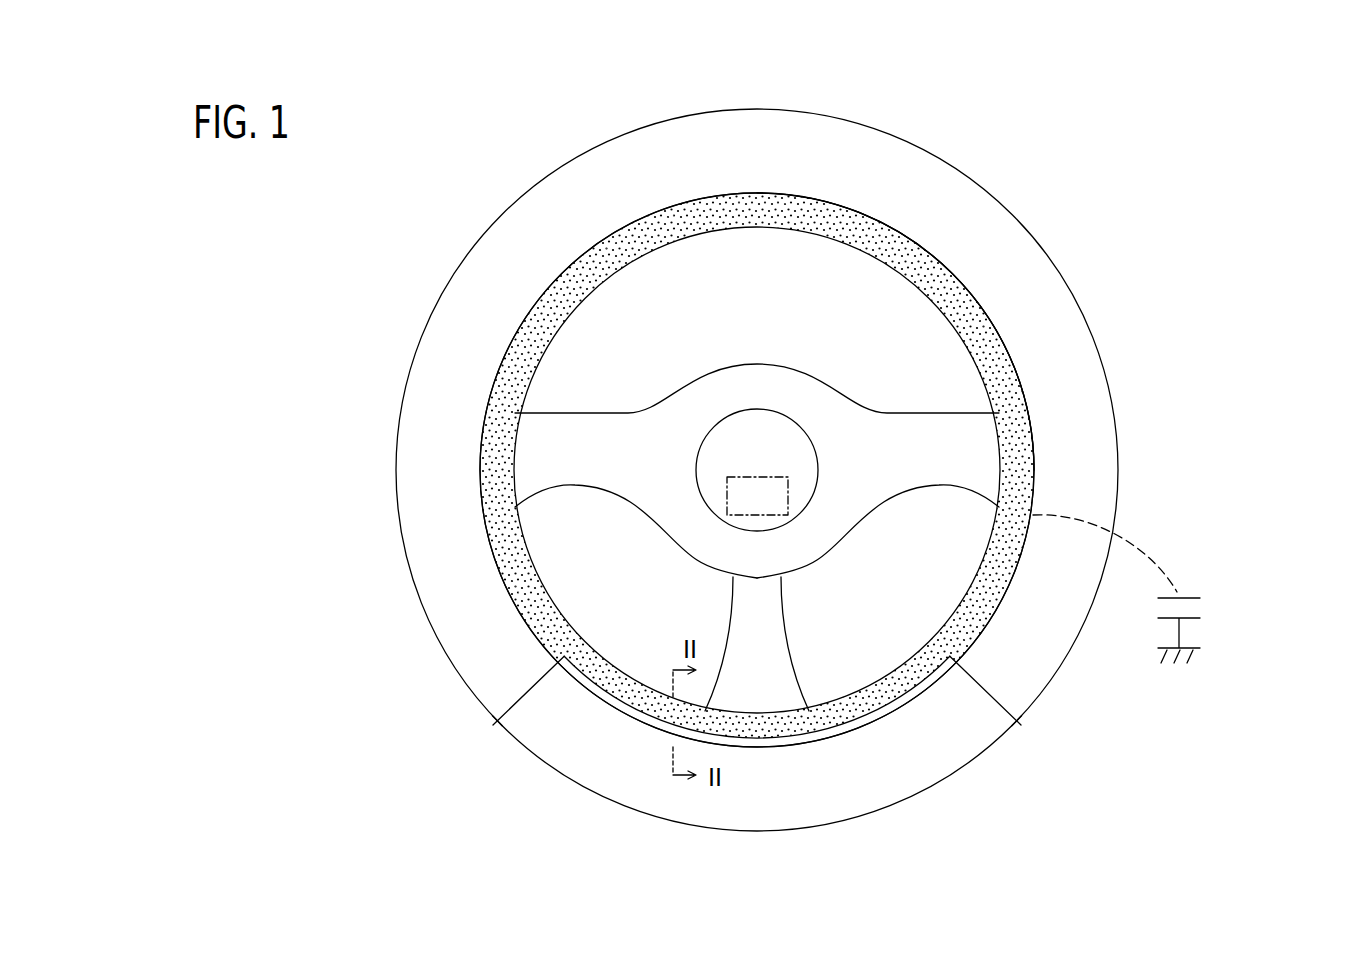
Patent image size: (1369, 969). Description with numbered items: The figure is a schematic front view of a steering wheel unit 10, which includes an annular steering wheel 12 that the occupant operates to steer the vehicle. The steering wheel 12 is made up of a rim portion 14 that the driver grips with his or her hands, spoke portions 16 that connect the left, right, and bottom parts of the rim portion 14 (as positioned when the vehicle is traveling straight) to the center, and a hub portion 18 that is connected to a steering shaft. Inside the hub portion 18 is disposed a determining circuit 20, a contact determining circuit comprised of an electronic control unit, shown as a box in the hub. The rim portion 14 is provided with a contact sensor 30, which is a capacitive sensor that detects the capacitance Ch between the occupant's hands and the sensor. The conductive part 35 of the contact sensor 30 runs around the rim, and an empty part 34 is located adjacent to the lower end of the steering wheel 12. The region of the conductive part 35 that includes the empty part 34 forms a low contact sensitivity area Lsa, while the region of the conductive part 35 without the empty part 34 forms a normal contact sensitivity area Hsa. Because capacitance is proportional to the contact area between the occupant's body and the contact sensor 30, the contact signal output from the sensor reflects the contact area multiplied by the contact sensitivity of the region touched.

The steering wheel unit 10 is at (379, 215).
The steering wheel 12 is at (316, 336).
The rim portion 14 is at (528, 353).
The spoke portions 16 is at (575, 435).
The hub portion 18 is at (733, 452).
The determining circuit 20 is at (790, 494).
The contact sensor 30 is at (763, 191).
The empty part 34 is at (789, 744).
The conductive part 35 is at (507, 552).
The normal contact sensitivity area Hsa is at (794, 109).
The low contact sensitivity area Lsa is at (737, 833).
The capacitance Ch is at (1135, 589).